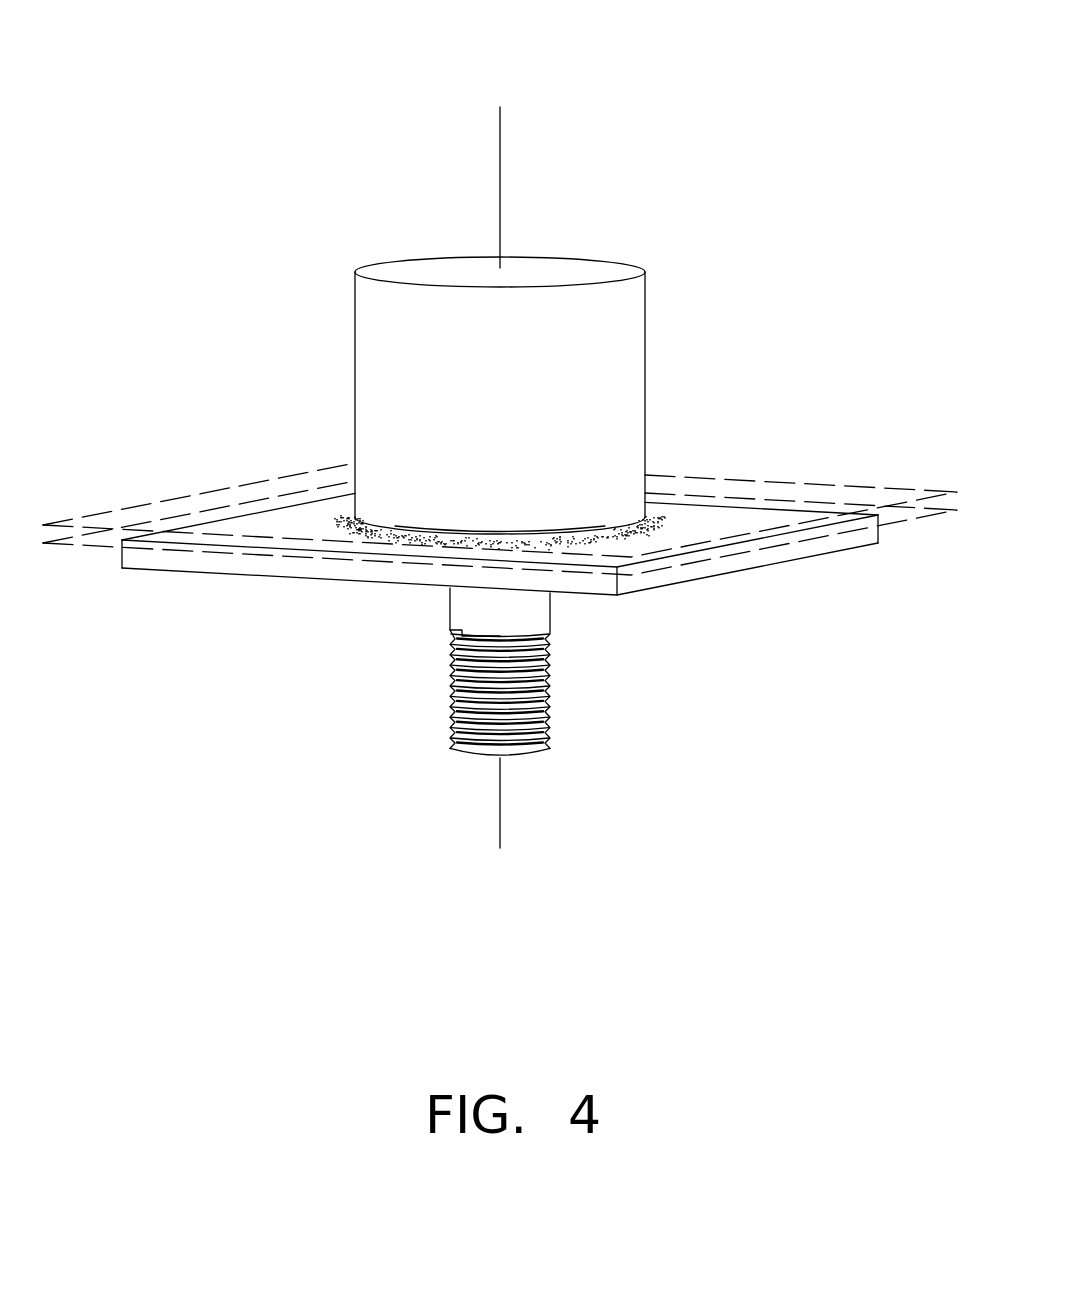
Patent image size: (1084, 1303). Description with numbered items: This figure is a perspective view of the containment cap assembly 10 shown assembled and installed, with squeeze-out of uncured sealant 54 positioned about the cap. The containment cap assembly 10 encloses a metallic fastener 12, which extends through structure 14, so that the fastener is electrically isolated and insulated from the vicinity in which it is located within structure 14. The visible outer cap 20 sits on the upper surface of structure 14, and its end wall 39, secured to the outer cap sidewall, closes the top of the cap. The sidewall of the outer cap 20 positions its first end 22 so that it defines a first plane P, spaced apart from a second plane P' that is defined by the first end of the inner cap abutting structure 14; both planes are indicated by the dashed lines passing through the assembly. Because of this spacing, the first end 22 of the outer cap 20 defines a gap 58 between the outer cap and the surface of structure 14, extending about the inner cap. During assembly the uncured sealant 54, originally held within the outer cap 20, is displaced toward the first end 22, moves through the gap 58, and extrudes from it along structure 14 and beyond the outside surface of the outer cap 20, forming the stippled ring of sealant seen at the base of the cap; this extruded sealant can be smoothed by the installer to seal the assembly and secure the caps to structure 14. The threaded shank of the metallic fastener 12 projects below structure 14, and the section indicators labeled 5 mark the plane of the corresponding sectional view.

The containment cap assembly 10 is at (652, 182).
The metallic fastener 12 is at (453, 740).
The structure 14 is at (500, 559).
The outer cap 20 is at (567, 376).
The first end 22 is at (417, 585).
The end wall 39 is at (587, 270).
The uncured sealant 54 is at (653, 520).
The gap 58 is at (623, 535).
The first plane P is at (500, 494).
The second plane P' is at (500, 552).
The section line 5 is at (488, 128).